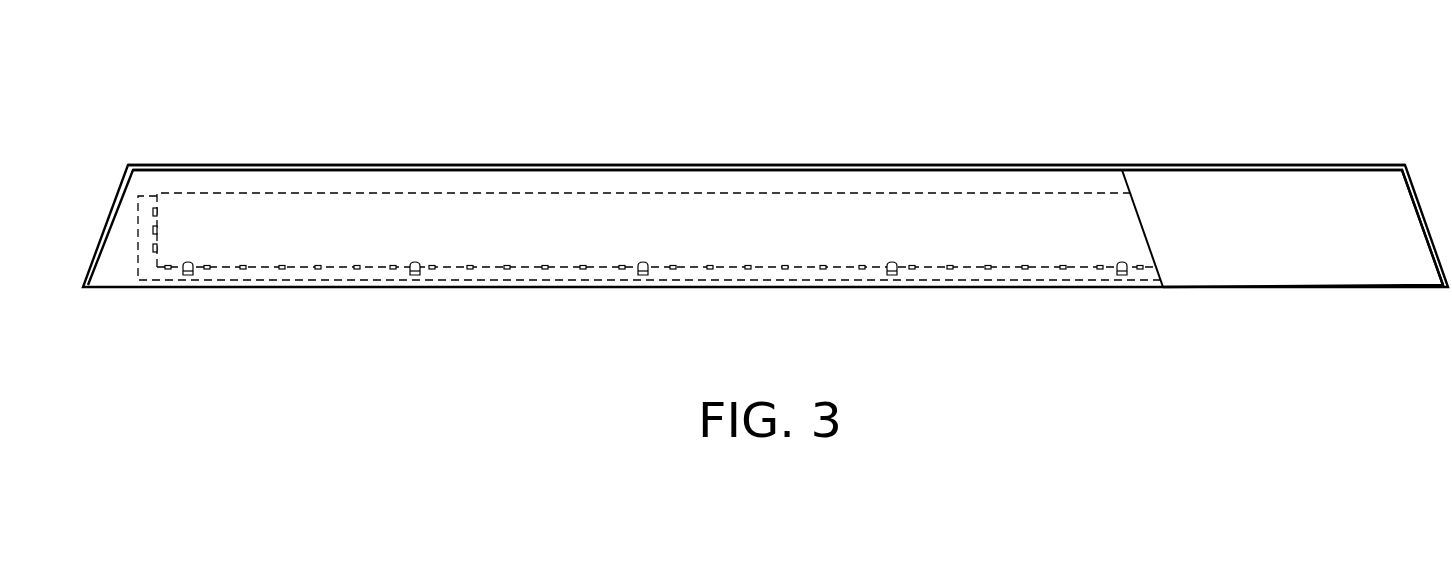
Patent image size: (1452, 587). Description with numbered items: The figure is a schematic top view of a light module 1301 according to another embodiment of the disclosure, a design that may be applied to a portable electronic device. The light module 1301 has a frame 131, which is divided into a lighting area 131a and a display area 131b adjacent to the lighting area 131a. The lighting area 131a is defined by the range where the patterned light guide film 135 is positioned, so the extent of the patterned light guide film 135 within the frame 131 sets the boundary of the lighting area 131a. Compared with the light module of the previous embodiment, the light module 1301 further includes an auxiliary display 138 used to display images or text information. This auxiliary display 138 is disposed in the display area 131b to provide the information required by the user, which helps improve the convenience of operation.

The frame 131 is at (222, 166).
The light module 1301 is at (340, 144).
The lighting area 131a is at (737, 180).
The display area 131b is at (1262, 196).
The patterned light guide film 135 is at (505, 218).
The auxiliary display 138 is at (1280, 268).